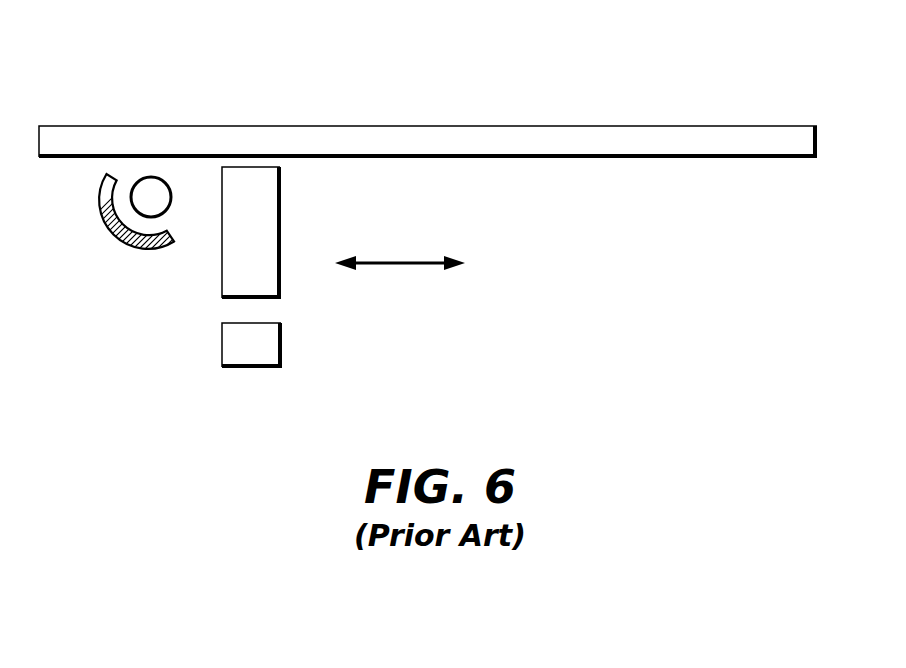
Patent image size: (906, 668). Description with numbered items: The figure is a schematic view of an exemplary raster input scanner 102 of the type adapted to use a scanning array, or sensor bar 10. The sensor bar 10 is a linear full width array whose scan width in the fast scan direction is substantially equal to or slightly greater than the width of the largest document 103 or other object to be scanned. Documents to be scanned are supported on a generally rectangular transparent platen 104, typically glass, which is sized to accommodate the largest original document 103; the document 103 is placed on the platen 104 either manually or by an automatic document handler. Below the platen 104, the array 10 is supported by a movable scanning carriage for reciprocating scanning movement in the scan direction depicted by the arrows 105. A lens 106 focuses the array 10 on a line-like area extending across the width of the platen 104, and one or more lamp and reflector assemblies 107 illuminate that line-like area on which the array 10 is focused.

The sensor bar 10 is at (199, 351).
The raster input scanner 102 is at (200, 99).
The document 103 is at (458, 127).
The transparent platen 104 is at (660, 140).
The arrows 105 is at (403, 266).
The lens 106 is at (277, 215).
The lamp and reflector assembly 107 is at (108, 227).